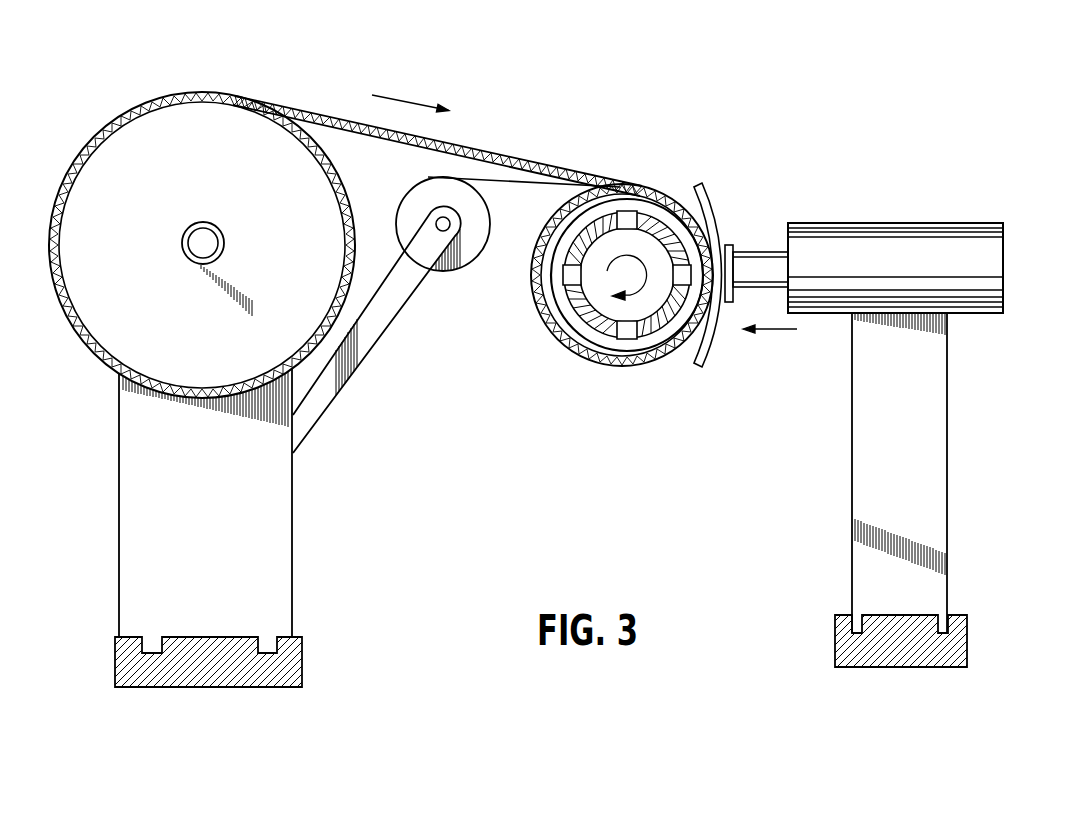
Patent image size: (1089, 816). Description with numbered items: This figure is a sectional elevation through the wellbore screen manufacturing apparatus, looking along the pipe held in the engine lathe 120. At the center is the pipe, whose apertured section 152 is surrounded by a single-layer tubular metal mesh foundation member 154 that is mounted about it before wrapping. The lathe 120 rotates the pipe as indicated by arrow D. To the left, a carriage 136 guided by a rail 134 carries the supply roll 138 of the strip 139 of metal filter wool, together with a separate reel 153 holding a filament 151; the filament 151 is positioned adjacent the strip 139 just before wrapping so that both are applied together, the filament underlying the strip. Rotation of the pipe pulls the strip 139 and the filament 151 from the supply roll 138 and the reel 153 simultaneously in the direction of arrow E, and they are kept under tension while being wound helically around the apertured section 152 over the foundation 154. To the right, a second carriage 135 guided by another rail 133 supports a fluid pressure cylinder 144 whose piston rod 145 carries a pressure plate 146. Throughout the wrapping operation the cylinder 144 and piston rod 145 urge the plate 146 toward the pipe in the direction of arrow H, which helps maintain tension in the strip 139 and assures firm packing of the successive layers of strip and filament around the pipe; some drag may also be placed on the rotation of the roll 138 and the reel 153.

The engine lathe 120 is at (615, 262).
The guide rail 133 is at (967, 640).
The guide rail 134 is at (223, 677).
The carriage 135 is at (947, 520).
The carriage 136 is at (292, 556).
The supply roll 138 is at (207, 93).
The strip of metal filter wool 139 is at (547, 163).
The fluid pressure cylinder 144 is at (910, 223).
The piston rod 145 is at (755, 252).
The pressure plate 146 is at (700, 188).
The filament 151 is at (513, 184).
The apertured section 152 is at (624, 335).
The reel 153 is at (440, 270).
The tubular metal mesh foundation member 154 is at (565, 330).
The arrow indicating pipe rotation D is at (647, 288).
The arrow indicating strip pulling direction E is at (400, 100).
The arrow indicating plate movement direction H is at (765, 330).